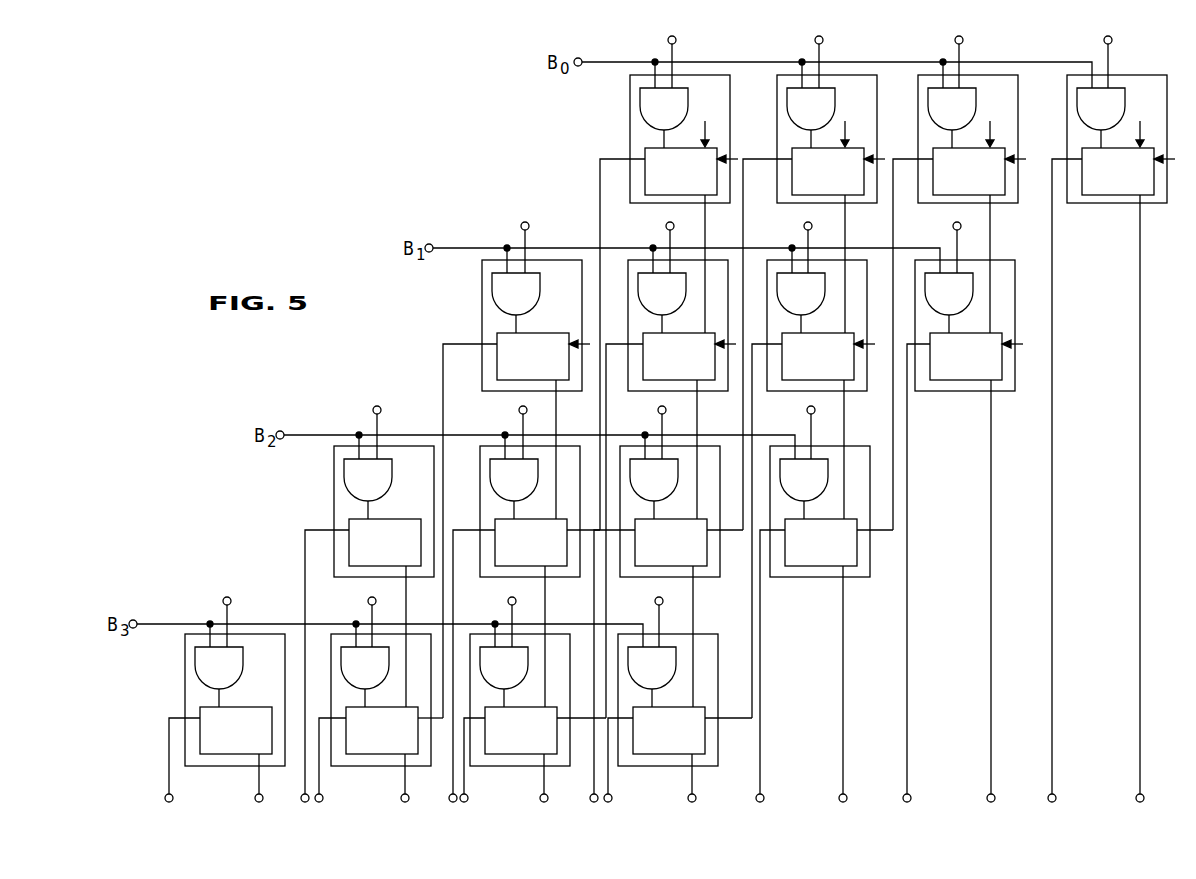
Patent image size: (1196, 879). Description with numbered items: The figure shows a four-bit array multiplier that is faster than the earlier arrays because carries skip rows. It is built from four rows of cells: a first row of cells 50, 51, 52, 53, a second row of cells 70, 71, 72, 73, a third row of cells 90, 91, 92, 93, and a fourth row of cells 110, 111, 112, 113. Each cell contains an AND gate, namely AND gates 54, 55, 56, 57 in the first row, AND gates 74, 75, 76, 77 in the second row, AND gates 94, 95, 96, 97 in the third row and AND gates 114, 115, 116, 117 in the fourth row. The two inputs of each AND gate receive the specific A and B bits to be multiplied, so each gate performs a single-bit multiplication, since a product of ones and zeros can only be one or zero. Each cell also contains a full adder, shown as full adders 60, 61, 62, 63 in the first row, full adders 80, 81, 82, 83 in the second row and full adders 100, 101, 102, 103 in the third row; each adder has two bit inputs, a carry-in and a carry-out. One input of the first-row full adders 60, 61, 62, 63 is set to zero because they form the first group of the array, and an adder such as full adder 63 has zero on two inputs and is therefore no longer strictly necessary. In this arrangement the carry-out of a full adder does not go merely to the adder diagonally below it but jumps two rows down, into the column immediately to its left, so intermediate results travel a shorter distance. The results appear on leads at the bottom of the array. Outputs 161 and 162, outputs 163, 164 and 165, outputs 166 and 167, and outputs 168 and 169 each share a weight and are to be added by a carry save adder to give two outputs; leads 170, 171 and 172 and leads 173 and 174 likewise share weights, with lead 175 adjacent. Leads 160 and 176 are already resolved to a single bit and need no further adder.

The cell 50 is at (630, 127).
The cell 51 is at (777, 127).
The cell 52 is at (918, 128).
The cell 53 is at (1067, 128).
The AND gate 54 is at (675, 119).
The AND gate 55 is at (822, 119).
The AND gate 56 is at (963, 119).
The AND gate 57 is at (1112, 119).
The full adder 60 is at (657, 190).
The full adder 61 is at (793, 190).
The full adder 62 is at (943, 190).
The full adder 63 is at (1105, 190).
The cell 70 is at (482, 312).
The cell 71 is at (628, 313).
The cell 72 is at (867, 310).
The cell 73 is at (1015, 300).
The AND gate 74 is at (527, 304).
The AND gate 75 is at (673, 304).
The AND gate 76 is at (812, 304).
The AND gate 77 is at (960, 304).
The full adder 80 is at (500, 373).
The full adder 81 is at (653, 383).
The full adder 82 is at (800, 383).
The full adder 83 is at (955, 383).
The cell 90 is at (334, 492).
The cell 91 is at (480, 503).
The cell 92 is at (720, 571).
The cell 93 is at (870, 455).
The AND gate 94 is at (379, 490).
The AND gate 95 is at (525, 490).
The AND gate 96 is at (665, 490).
The AND gate 97 is at (815, 490).
The full adder 100 is at (358, 568).
The full adder 101 is at (508, 568).
The full adder 102 is at (653, 568).
The full adder 103 is at (813, 568).
The cell 110 is at (185, 688).
The cell 111 is at (418, 766).
The cell 112 is at (557, 766).
The cell 113 is at (716, 766).
The AND gate 114 is at (232, 678).
The AND gate 115 is at (378, 678).
The AND gate 116 is at (517, 678).
The AND gate 117 is at (665, 678).
The lead 160 is at (151, 806).
The output 161 is at (242, 806).
The output 162 is at (289, 806).
The output 163 is at (335, 806).
The output 164 is at (389, 806).
The output 165 is at (437, 806).
The output 166 is at (480, 806).
The output 167 is at (528, 806).
The output 168 is at (577, 806).
The output 169 is at (624, 806).
The lead 170 is at (708, 806).
The lead 171 is at (776, 806).
The lead 172 is at (859, 806).
The lead 173 is at (923, 806).
The lead 174 is at (1007, 806).
The lead 175 is at (1068, 806).
The lead 176 is at (1156, 806).